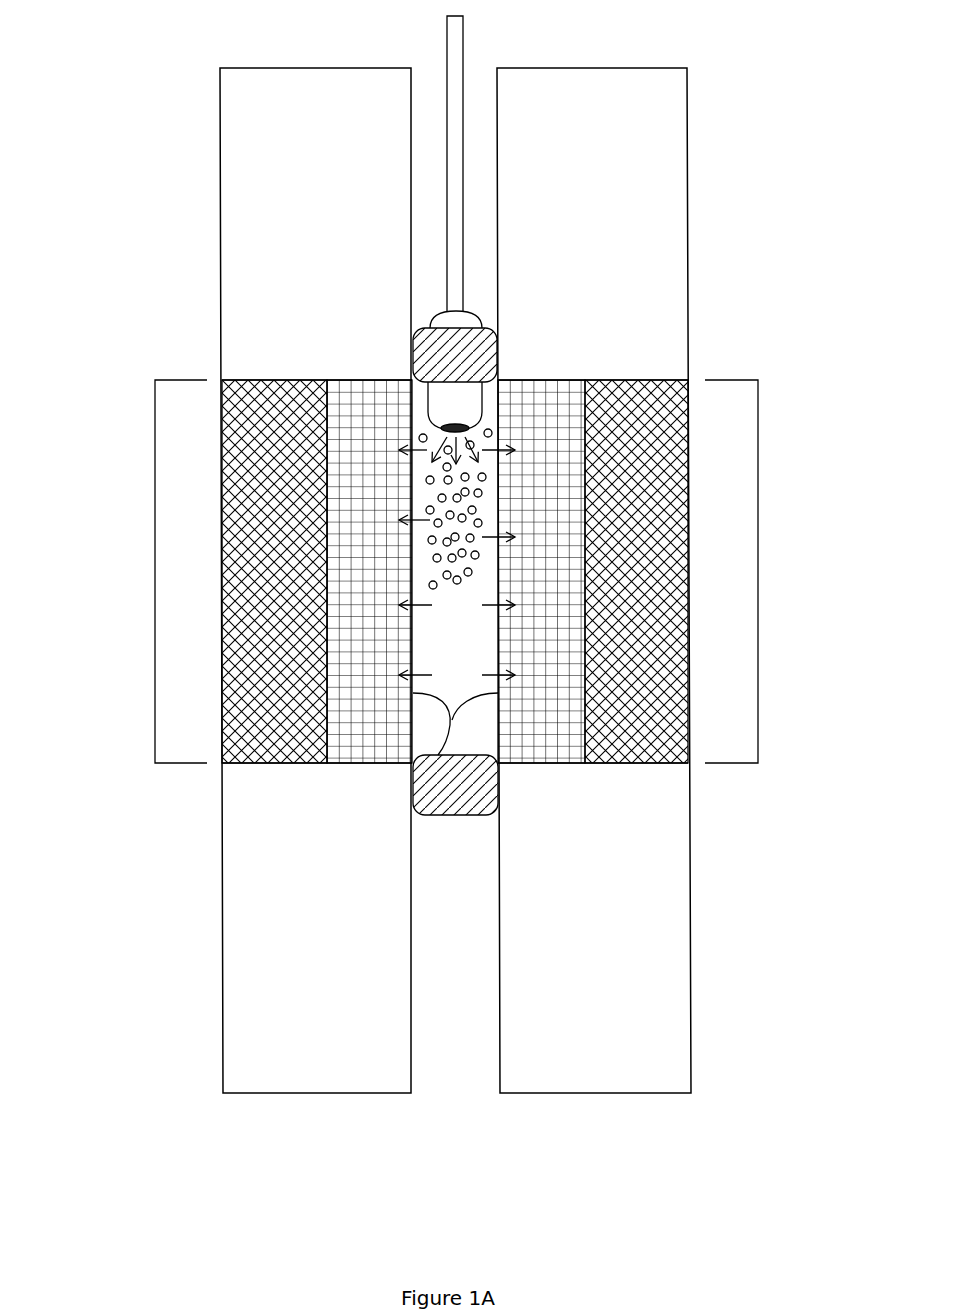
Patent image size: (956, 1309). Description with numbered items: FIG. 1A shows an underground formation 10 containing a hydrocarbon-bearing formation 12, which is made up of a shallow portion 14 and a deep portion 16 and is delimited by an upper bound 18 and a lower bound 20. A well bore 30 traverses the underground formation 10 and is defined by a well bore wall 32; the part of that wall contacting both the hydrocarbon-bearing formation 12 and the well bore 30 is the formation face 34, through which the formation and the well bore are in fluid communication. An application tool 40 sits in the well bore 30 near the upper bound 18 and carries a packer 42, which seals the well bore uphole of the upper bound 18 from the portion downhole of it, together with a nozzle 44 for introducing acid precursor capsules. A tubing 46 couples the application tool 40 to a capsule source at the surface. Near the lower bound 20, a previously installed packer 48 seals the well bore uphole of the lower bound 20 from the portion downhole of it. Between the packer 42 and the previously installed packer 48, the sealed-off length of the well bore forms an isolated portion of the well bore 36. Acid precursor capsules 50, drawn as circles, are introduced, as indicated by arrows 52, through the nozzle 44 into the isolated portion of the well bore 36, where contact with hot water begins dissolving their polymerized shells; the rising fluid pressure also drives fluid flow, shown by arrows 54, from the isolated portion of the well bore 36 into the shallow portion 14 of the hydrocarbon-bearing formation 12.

The underground formation 10 is at (296, 181).
The hydrocarbon-bearing formation 12 is at (155, 553).
The shallow portion 14 is at (353, 637).
The deep portion 16 is at (266, 639).
The upper bound 18 is at (290, 380).
The lower bound 20 is at (258, 763).
The well bore 30 is at (445, 891).
The well bore wall 32 is at (497, 105).
The formation face 34 is at (415, 777).
The isolated portion of the well bore 36 is at (440, 633).
The application tool 40 is at (443, 412).
The packer 42 is at (441, 363).
The nozzle 44 is at (477, 422).
The tubing 46 is at (445, 50).
The previously installed packer 48 is at (443, 795).
The acid precursor capsules 50 is at (479, 553).
The arrows 52 is at (436, 445).
The arrows 54 is at (457, 602).